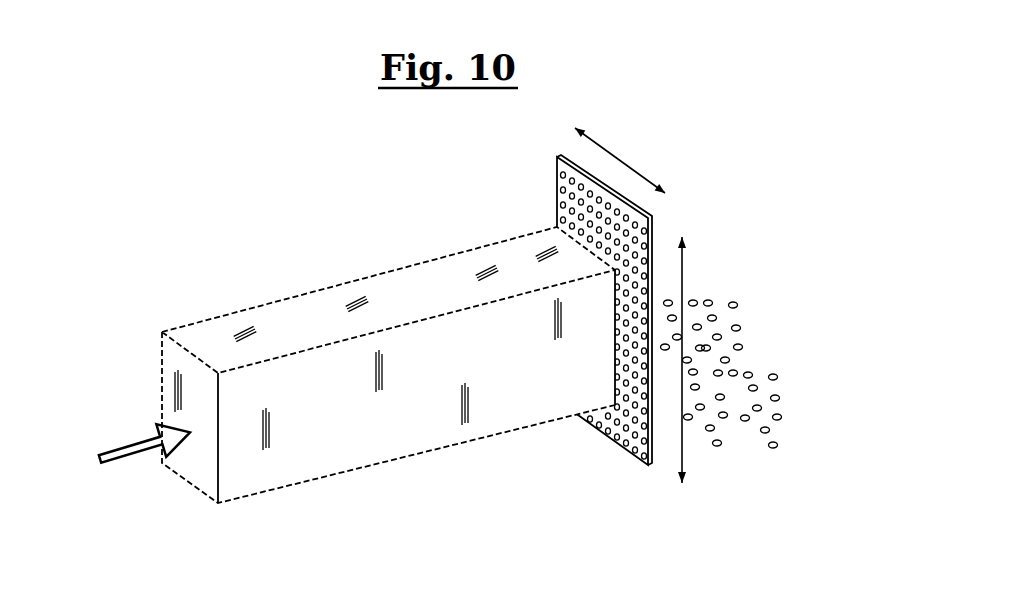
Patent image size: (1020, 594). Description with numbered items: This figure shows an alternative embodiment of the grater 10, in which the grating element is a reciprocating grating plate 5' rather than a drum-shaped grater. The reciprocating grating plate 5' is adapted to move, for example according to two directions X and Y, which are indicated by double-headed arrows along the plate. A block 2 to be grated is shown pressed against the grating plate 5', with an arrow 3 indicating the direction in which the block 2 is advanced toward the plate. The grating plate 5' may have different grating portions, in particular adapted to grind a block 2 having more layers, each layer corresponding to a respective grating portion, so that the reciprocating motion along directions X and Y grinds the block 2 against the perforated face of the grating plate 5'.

The apparatus 10 is at (450, 322).
The block 2 is at (300, 307).
The flow direction arrow 3 is at (123, 452).
The reciprocating grating plate 5' is at (647, 310).
The direction X is at (610, 148).
The direction Y is at (682, 464).